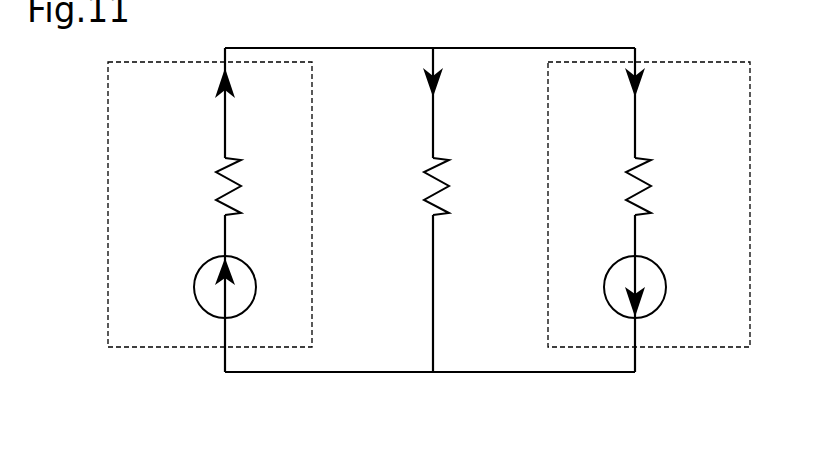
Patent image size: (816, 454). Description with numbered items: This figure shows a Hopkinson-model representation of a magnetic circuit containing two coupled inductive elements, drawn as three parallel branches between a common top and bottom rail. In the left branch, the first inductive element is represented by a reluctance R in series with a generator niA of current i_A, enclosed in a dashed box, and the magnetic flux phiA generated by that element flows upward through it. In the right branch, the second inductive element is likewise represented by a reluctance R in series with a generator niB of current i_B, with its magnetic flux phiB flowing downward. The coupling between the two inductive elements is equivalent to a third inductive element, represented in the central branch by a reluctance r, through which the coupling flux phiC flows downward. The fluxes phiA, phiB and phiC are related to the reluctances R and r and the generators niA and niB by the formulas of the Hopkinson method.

The magnetic flux phiA is at (200, 88).
The magnetic flux phiB is at (653, 88).
The magnetic flux phiC is at (412, 88).
The reluctance R is at (417, 186).
The reluctance r is at (422, 186).
The generator niA is at (194, 287).
The generator niB is at (659, 287).